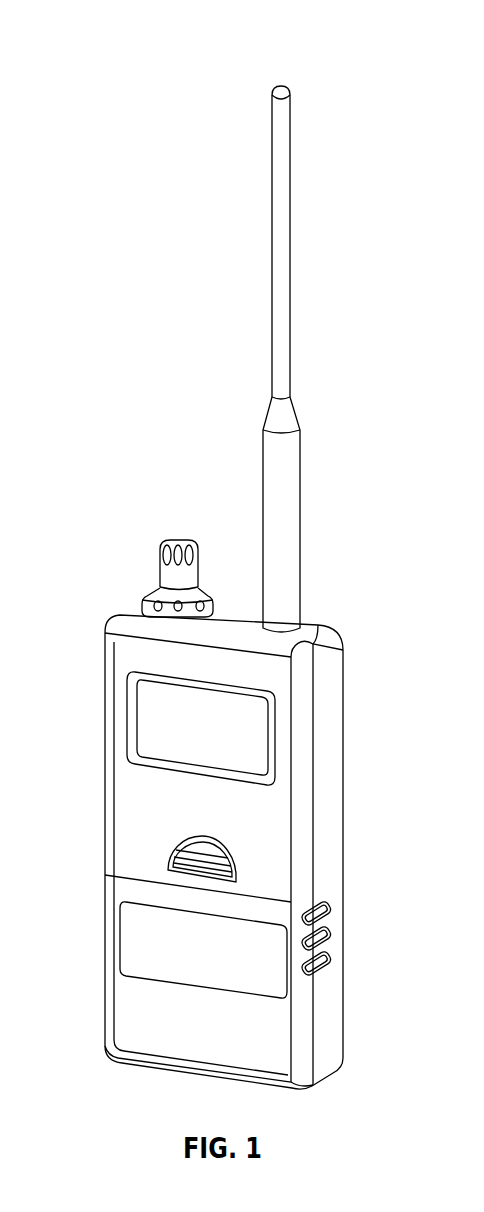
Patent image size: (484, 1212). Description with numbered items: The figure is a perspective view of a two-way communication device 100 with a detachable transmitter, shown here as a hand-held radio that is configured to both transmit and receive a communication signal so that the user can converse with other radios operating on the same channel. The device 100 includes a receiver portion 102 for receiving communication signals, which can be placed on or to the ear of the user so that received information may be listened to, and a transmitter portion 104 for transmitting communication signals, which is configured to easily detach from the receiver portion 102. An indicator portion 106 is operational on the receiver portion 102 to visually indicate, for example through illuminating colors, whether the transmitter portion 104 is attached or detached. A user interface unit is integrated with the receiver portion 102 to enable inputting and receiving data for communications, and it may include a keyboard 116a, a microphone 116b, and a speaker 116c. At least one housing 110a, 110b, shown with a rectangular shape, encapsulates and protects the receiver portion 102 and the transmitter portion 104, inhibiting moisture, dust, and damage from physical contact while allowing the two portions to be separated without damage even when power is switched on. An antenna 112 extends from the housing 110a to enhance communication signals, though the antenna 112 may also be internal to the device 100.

The two-way communication device 100 is at (158, 48).
The receiver portion 102 is at (104, 735).
The transmitter portion 104 is at (116, 1008).
The indicator portion 106 is at (158, 546).
The antenna 112 is at (292, 183).
The housing 110a is at (277, 830).
The housing 110b is at (248, 1036).
The keyboard 116a is at (167, 853).
The microphone 116b is at (248, 728).
The speaker 116c is at (310, 905).